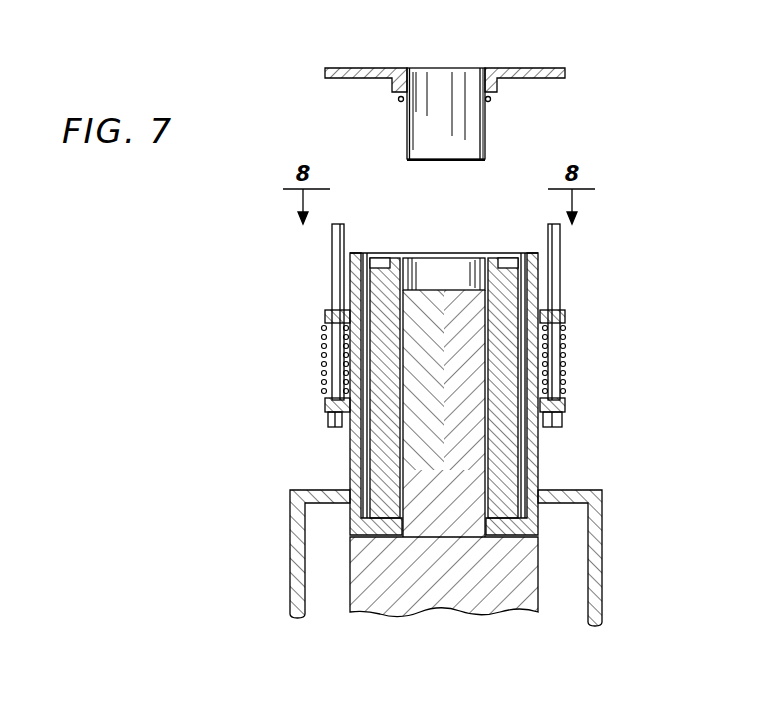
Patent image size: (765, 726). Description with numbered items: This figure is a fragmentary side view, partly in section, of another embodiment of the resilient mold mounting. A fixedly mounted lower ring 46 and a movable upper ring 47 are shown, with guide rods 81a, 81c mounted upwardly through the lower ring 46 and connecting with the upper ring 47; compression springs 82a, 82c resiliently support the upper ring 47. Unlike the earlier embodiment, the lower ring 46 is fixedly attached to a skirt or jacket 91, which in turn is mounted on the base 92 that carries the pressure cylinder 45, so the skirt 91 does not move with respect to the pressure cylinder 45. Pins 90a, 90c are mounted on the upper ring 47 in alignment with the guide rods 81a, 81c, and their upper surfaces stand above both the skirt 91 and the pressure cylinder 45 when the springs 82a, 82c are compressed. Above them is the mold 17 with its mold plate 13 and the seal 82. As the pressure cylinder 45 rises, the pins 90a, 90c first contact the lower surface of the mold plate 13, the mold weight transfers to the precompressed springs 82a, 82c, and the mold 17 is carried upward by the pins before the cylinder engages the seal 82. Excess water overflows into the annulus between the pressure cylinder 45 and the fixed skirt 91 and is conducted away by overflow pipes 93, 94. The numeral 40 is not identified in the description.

The mold plate 13 is at (361, 67).
The mold 17 is at (487, 142).
The seal 82 is at (491, 100).
The pin 90a is at (332, 265).
The pin 90c is at (560, 243).
The skirt or jacket 91 is at (533, 255).
The pressure cylinder 45 is at (417, 262).
The base 92 is at (380, 537).
The base core 40 is at (470, 597).
The overflow pipe 93 is at (293, 575).
The overflow pipe 94 is at (592, 551).
The upper ring 47 is at (325, 315).
The lower ring 46 is at (325, 413).
The guide rod 81a is at (324, 336).
The compression spring 82a is at (322, 369).
The guide rod 81c is at (555, 346).
The compression spring 82c is at (564, 377).